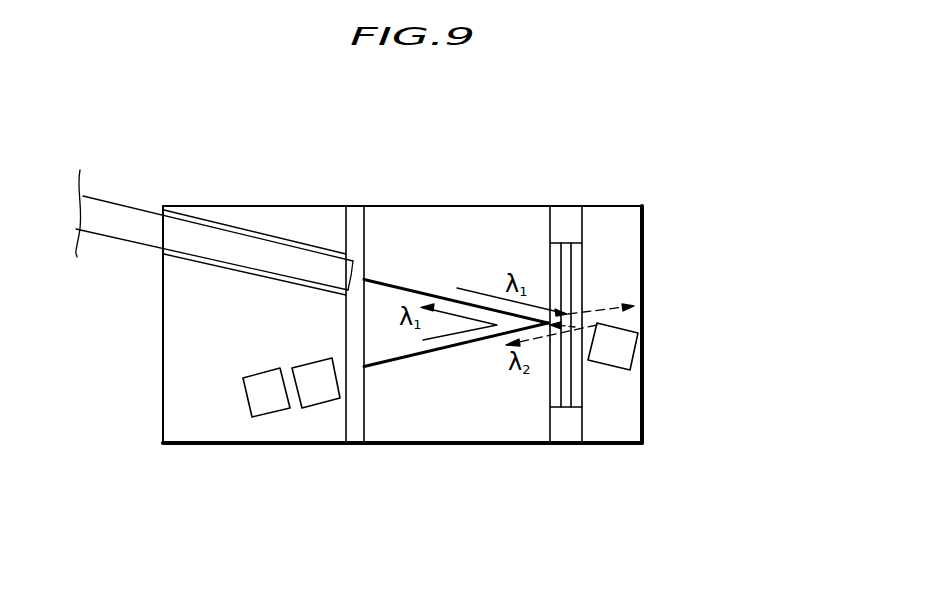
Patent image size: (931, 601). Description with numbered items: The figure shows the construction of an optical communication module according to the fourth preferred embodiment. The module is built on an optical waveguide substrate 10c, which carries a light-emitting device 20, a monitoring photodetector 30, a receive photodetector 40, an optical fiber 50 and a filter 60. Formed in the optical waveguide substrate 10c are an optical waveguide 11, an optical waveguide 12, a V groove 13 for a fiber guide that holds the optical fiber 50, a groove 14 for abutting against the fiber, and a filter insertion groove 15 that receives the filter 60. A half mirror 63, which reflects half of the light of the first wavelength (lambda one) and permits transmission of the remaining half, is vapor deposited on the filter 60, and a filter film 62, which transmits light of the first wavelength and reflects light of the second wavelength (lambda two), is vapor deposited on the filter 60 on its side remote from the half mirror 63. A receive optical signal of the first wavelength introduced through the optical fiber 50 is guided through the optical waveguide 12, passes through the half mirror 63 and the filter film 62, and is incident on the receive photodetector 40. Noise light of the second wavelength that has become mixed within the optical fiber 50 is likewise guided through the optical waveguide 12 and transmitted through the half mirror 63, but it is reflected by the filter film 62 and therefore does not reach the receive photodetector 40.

The optical waveguide substrate 10c is at (383, 205).
The optical fiber 50 is at (113, 220).
The V groove for a fiber guide 13 is at (230, 228).
The groove for abutting against a fiber 14 is at (355, 435).
The optical waveguide 12 is at (433, 295).
The optical waveguide 11 is at (433, 352).
The filter insertion groove 15 is at (572, 433).
The filter 60 is at (567, 243).
The half mirror 63 is at (553, 243).
The filter film 62 is at (583, 243).
The receive photodetector 40 is at (633, 345).
The light-emitting device 20 is at (292, 367).
The monitoring photodetector 30 is at (260, 415).